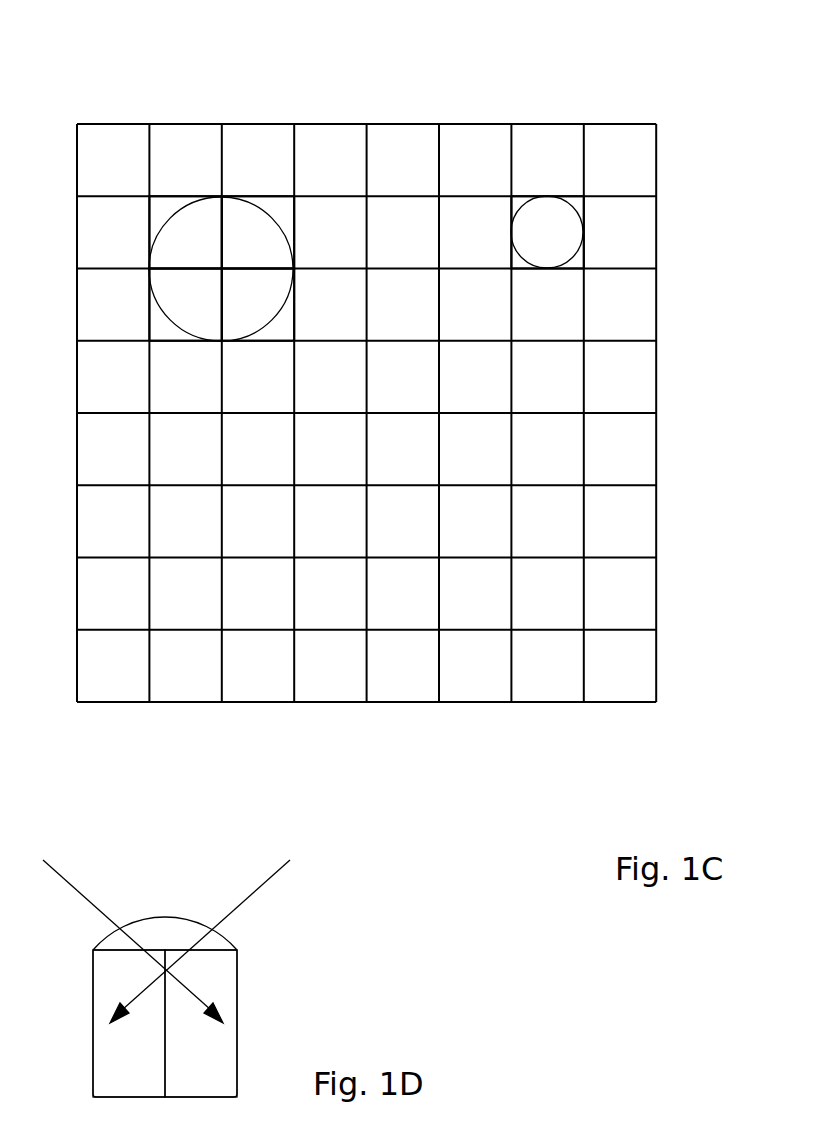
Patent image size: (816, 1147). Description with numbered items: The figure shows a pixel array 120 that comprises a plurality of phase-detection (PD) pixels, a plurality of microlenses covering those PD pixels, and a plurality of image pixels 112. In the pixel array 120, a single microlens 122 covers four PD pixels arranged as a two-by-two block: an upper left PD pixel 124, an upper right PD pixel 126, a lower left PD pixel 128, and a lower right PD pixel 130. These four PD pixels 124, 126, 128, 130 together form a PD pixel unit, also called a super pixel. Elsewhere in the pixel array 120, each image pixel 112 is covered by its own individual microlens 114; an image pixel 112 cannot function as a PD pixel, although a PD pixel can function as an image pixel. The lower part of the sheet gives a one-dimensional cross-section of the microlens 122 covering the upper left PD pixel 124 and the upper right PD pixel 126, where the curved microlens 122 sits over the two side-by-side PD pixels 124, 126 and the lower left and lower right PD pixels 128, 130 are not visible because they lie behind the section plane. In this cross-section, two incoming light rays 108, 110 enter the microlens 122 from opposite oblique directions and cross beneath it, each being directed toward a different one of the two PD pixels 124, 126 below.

In FIG. 1C, the pixel array 120 is at (148, 63).
In FIG. 1C, the microlens 122 is at (273, 218).
In FIG. 1D, the microlens 122 is at (230, 932).
In FIG. 1C, the upper left PD pixel 124 is at (208, 250).
In FIG. 1D, the upper left PD pixel 124 is at (150, 1071).
In FIG. 1C, the upper right PD pixel 126 is at (271, 250).
In FIG. 1D, the upper right PD pixel 126 is at (220, 1071).
In FIG. 1C, the lower left PD pixel 128 is at (208, 309).
In FIG. 1C, the lower right PD pixel 130 is at (271, 309).
In FIG. 1C, the microlens 114 is at (572, 200).
In FIG. 1C, the image pixel 112 is at (565, 242).
In FIG. 1D, the first light ray 108 is at (77, 877).
In FIG. 1D, the second light ray 110 is at (263, 877).